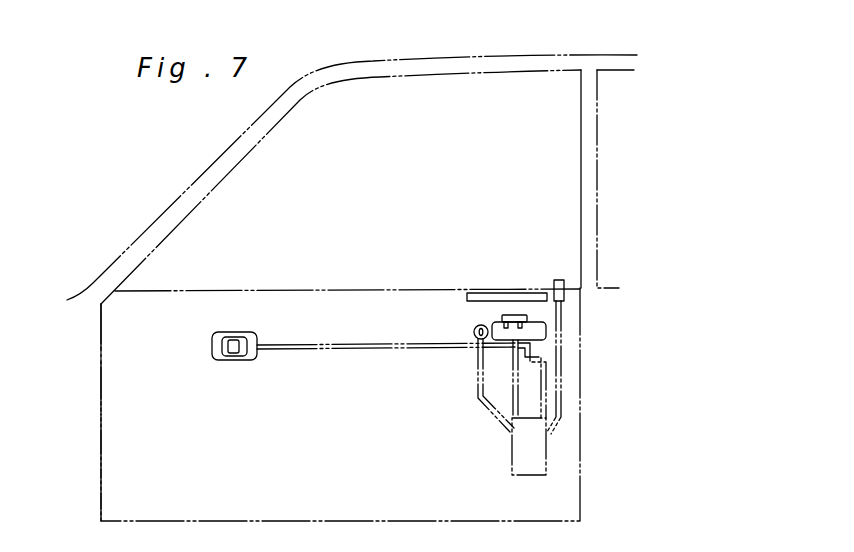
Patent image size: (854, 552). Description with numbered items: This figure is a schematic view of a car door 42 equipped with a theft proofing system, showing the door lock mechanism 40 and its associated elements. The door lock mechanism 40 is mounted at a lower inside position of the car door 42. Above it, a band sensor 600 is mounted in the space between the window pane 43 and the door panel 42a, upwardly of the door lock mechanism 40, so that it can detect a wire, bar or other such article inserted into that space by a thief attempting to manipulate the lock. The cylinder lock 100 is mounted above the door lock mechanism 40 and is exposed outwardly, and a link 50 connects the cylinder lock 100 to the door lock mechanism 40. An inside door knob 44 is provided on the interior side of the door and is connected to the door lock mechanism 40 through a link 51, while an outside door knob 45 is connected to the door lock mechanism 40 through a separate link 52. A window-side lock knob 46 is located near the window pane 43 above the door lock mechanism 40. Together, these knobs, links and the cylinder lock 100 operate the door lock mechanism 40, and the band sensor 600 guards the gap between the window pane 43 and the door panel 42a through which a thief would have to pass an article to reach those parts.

The door lock mechanism 40 is at (511, 463).
The car door 42 is at (581, 453).
The door panel 42a is at (118, 438).
The window pane 43 is at (559, 78).
The inside door knob 44 is at (243, 362).
The outside door knob 45 is at (534, 322).
The window-side lock knob 46 is at (558, 280).
The link 50 is at (477, 376).
The link 51 is at (560, 401).
The link 52 is at (512, 388).
The cylinder lock 100 is at (474, 330).
The band sensor 600 is at (488, 291).